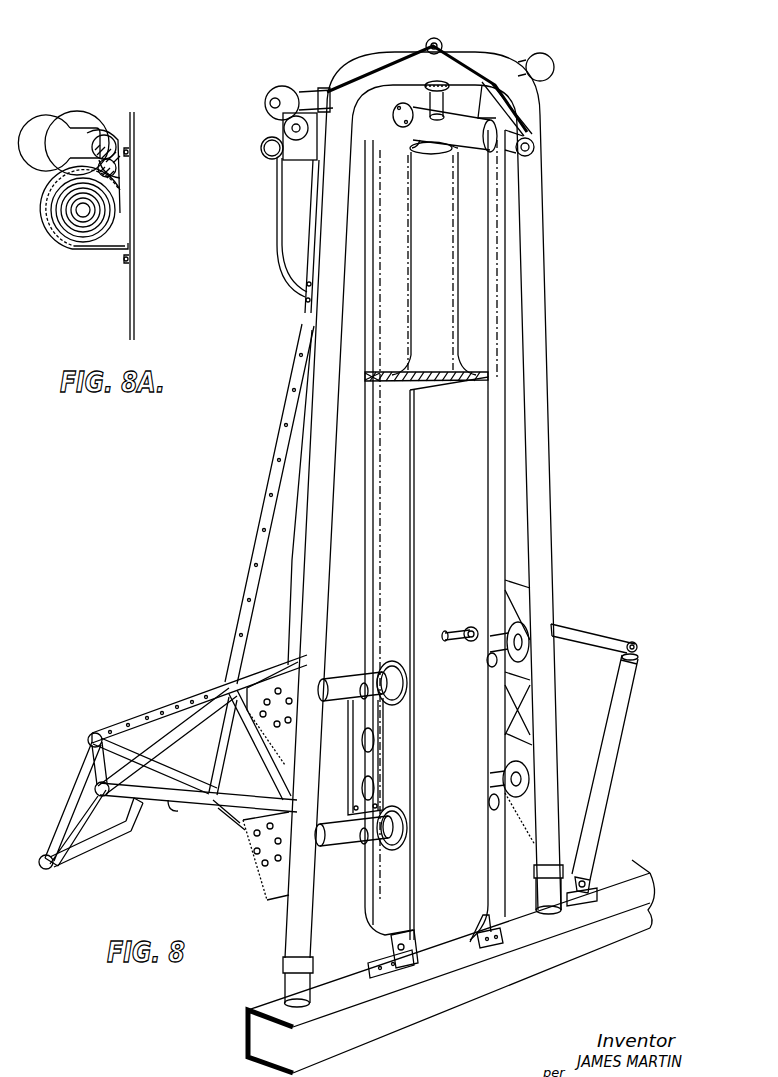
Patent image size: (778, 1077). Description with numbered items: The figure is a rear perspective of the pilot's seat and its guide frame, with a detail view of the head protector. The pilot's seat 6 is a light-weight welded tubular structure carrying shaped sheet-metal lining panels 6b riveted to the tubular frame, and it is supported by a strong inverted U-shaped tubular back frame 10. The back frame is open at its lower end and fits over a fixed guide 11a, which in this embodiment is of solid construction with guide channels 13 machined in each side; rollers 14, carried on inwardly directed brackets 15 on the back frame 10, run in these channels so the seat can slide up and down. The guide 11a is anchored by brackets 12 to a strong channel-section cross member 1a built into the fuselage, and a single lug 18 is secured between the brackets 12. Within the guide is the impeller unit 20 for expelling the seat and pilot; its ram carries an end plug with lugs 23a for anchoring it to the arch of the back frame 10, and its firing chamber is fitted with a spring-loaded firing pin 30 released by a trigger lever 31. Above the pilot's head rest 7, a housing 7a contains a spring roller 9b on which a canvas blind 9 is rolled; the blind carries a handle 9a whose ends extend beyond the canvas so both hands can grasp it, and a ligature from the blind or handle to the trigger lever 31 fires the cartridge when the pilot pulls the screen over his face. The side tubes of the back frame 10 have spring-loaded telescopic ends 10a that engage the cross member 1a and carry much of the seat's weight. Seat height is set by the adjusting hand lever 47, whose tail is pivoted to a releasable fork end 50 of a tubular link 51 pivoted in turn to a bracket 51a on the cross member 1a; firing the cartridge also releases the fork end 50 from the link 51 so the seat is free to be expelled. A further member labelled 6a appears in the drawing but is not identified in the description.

In FIG. 8, the channel section cross member 1a is at (378, 1028).
In FIG. 8, the pilot's seat 6 is at (163, 803).
In FIG. 8, the frame foot member 6a is at (58, 868).
In FIG. 8, the lining panels 6b is at (258, 594).
In FIG. 8, the head rest 7 is at (277, 250).
In FIG. 8A, the housing 7a is at (45, 237).
In FIG. 8, the housing 7a is at (285, 124).
In FIG. 8A, the blind 9 is at (120, 183).
In FIG. 8, the blind 9 is at (323, 90).
In FIG. 8A, the handle 9a is at (72, 137).
In FIG. 8, the handle 9a is at (293, 95).
In FIG. 8A, the spring roller 9b is at (92, 218).
In FIG. 8, the back frame 10 is at (318, 424).
In FIG. 8, the telescopic ends 10a is at (283, 970).
In FIG. 8, the guide 11a is at (480, 445).
In FIG. 8, the brackets 12 is at (418, 962).
In FIG. 8, the guide channels 13 is at (480, 362).
In FIG. 8, the rollers 14 is at (398, 660).
In FIG. 8, the brackets 15 is at (355, 690).
In FIG. 8, the lug 18 is at (450, 940).
In FIG. 8, the impeller unit 20 is at (440, 263).
In FIG. 8, the lugs 23a is at (423, 107).
In FIG. 8, the firing pin 30 is at (537, 145).
In FIG. 8, the trigger lever 31 is at (500, 115).
In FIG. 8, the seat adjusting hand lever 47 is at (580, 630).
In FIG. 8, the releasable fork end 50 is at (639, 648).
In FIG. 8, the tubular link 51 is at (615, 745).
In FIG. 8, the bracket 51a is at (592, 880).